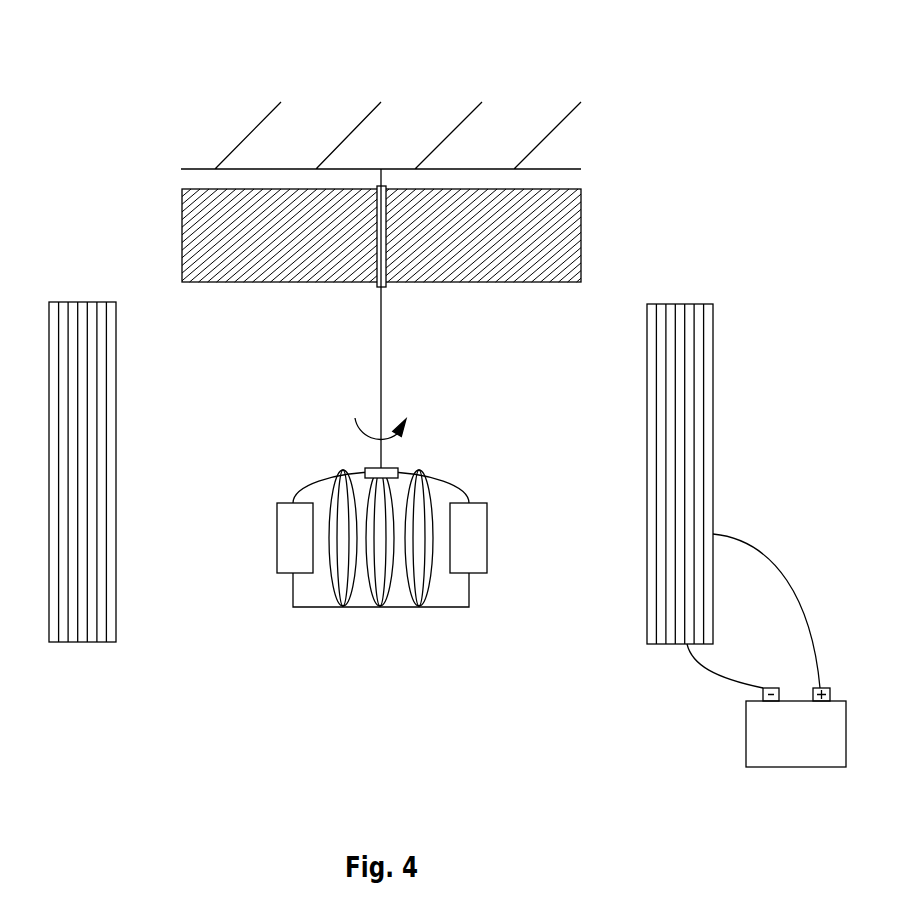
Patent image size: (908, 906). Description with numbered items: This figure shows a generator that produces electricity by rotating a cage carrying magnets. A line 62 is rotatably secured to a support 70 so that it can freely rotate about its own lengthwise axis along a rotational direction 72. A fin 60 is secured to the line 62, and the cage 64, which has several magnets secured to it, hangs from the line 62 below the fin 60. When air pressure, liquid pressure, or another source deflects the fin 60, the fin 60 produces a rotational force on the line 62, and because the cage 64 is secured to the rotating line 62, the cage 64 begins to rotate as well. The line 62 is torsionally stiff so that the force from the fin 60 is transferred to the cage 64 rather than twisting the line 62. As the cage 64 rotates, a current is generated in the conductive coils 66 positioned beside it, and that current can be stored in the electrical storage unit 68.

The fin 60 is at (182, 207).
The line 62 is at (381, 320).
The cage 64 is at (446, 478).
The conductive coils 66 is at (65, 302).
The electrical storage unit 68 is at (838, 700).
The support 70 is at (562, 102).
The rotational direction 72 is at (398, 418).